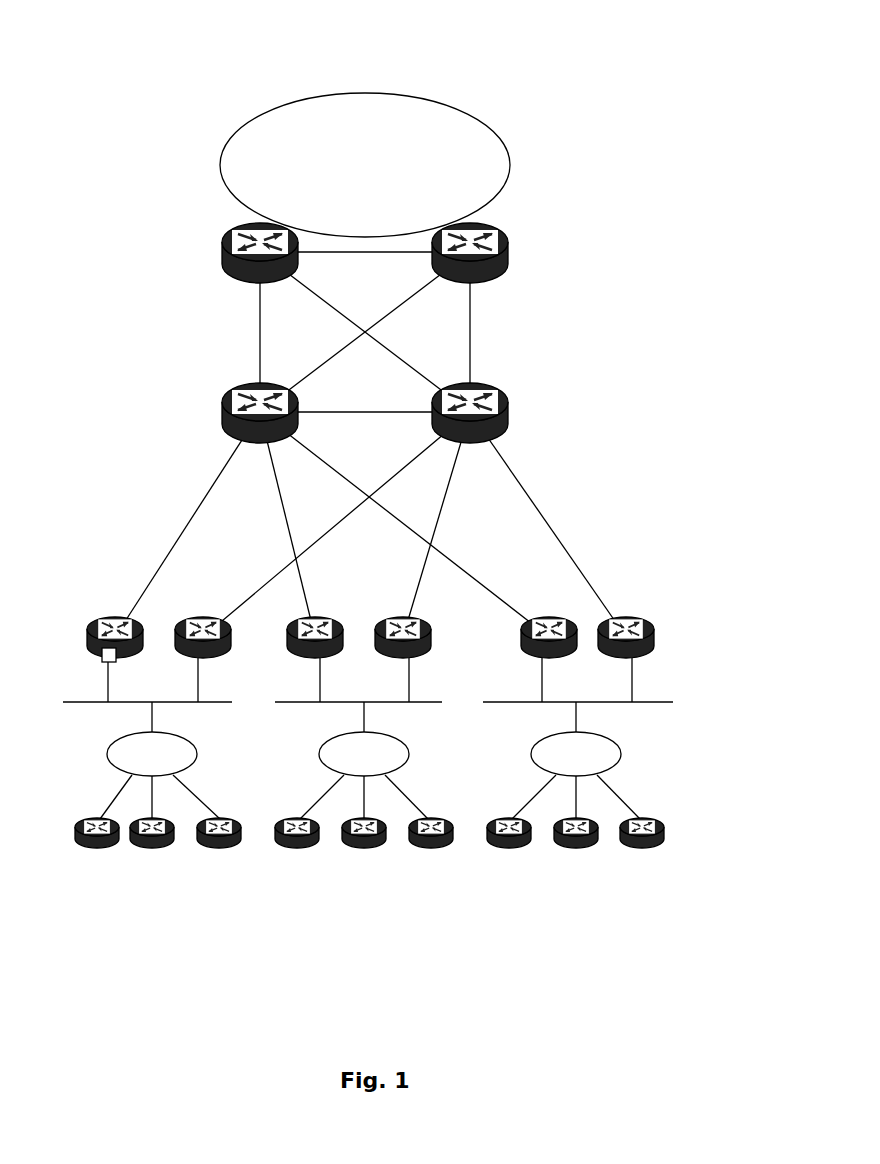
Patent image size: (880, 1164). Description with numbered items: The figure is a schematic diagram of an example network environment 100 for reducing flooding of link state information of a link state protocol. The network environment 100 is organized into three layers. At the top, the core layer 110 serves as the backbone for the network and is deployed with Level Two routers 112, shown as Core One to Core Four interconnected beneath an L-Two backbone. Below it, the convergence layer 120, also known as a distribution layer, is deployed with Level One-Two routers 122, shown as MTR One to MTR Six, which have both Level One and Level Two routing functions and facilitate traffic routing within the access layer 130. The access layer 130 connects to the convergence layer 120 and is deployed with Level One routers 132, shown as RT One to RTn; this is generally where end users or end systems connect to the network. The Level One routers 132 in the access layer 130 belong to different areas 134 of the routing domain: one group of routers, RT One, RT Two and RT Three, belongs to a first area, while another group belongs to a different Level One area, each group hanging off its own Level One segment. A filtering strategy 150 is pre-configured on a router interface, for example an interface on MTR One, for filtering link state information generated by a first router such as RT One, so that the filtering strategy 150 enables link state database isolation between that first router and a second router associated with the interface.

The network environment 100 is at (78, 73).
The core layer 110 is at (732, 92).
The Level 2 routers 112 is at (508, 234).
The convergence layer 120 is at (732, 452).
The Level 1-2 routers 122 is at (638, 620).
The access layer 130 is at (732, 700).
The Level 1 routers 132 is at (648, 822).
The areas 134 is at (235, 895).
The filtering strategy 150 is at (106, 648).